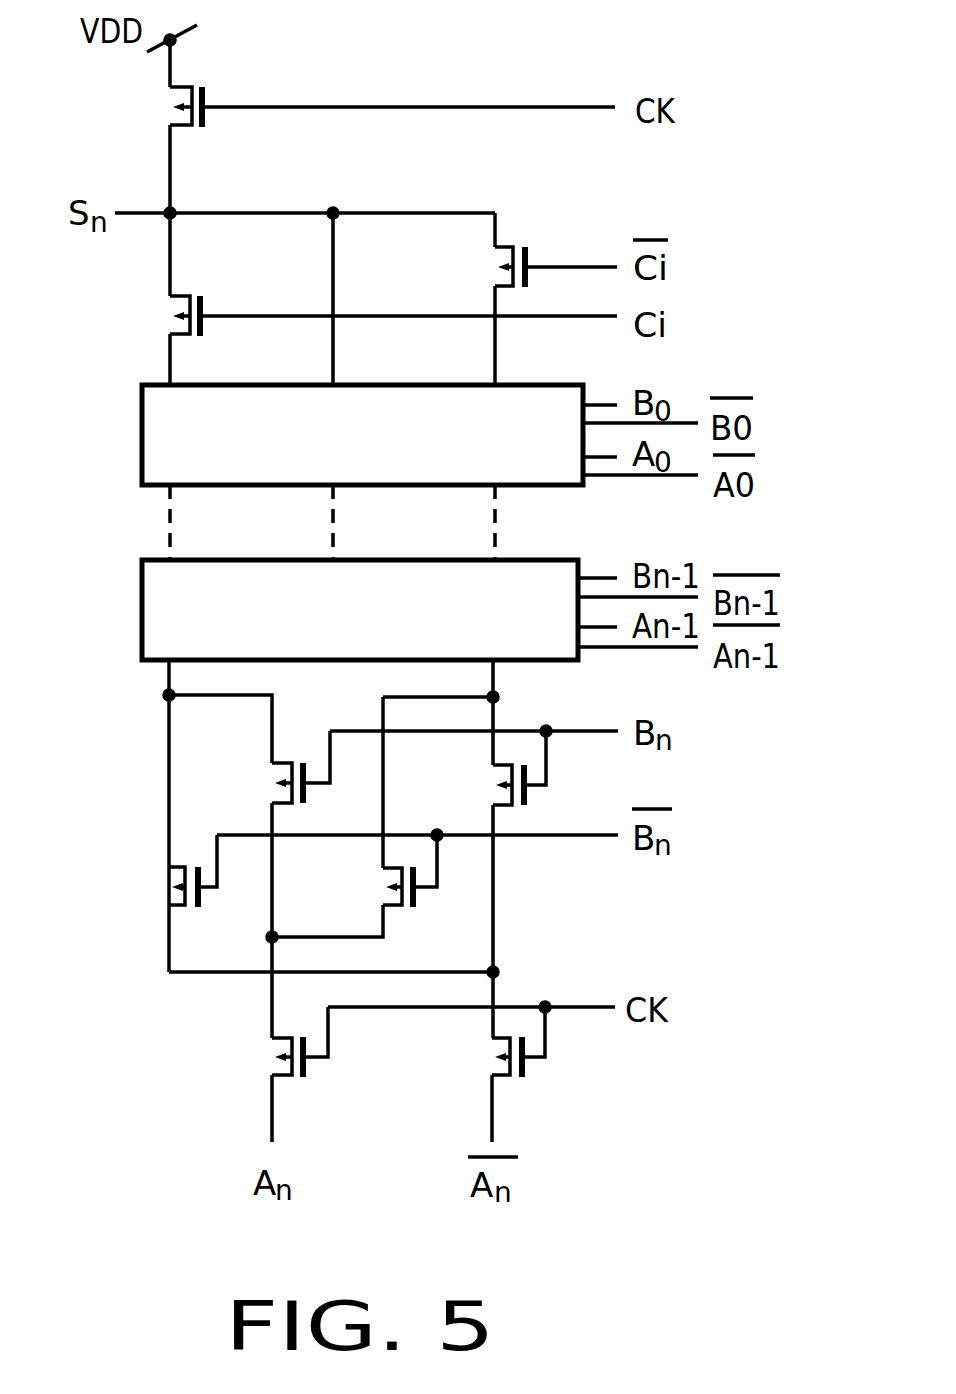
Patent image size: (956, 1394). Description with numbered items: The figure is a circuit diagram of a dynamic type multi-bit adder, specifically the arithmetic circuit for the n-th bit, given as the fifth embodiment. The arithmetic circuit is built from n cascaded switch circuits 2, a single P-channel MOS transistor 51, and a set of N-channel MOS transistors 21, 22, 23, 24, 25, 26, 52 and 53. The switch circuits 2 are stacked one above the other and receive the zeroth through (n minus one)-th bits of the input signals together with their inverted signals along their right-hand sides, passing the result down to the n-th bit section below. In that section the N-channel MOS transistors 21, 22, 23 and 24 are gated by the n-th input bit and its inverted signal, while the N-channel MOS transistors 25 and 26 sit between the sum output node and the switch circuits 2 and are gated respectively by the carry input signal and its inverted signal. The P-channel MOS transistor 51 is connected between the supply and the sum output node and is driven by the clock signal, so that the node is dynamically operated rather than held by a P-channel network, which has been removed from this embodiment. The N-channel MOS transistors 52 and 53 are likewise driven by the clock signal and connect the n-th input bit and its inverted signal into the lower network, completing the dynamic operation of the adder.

The switch circuit 2 is at (143, 602).
The N-channel MOS transistor 21 is at (297, 755).
The N-channel MOS transistor 22 is at (187, 858).
The N-channel MOS transistor 23 is at (378, 887).
The N-channel MOS transistor 24 is at (487, 785).
The N-channel MOS transistor 25 is at (208, 303).
The N-channel MOS transistor 26 is at (527, 242).
The P-channel MOS transistor 51 is at (213, 120).
The N-channel MOS transistor 52 is at (258, 1062).
The N-channel MOS transistor 53 is at (482, 1062).